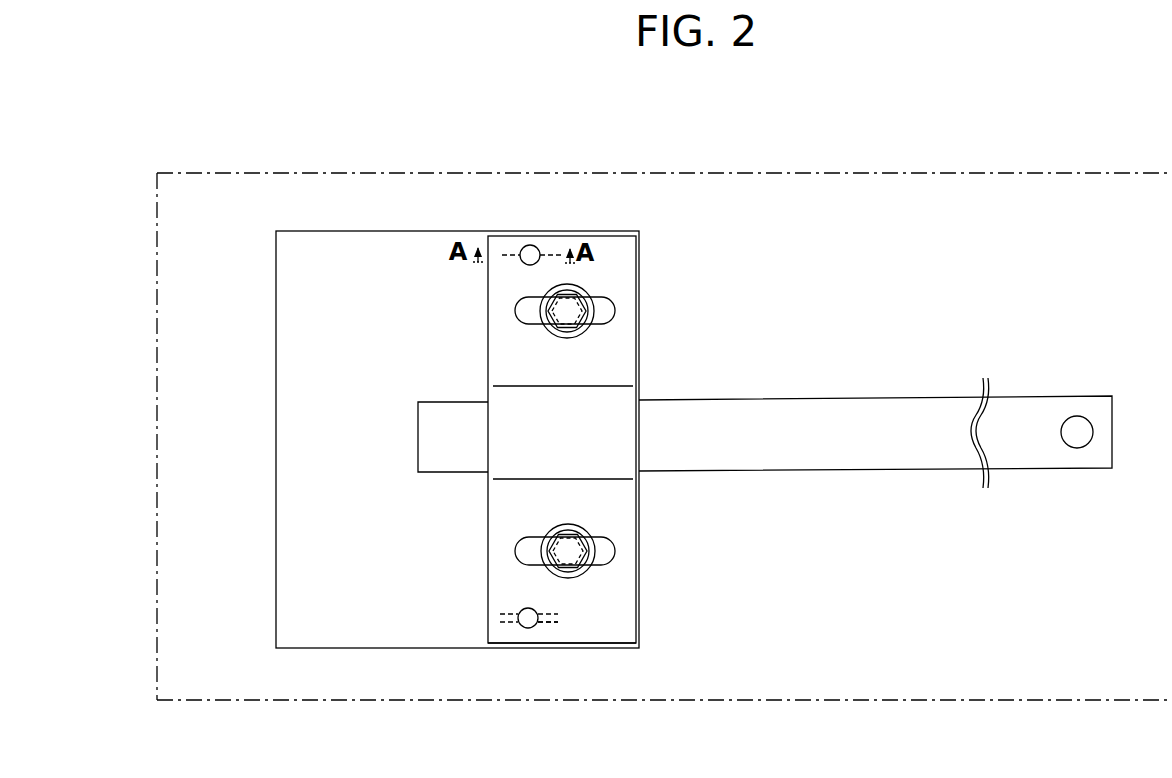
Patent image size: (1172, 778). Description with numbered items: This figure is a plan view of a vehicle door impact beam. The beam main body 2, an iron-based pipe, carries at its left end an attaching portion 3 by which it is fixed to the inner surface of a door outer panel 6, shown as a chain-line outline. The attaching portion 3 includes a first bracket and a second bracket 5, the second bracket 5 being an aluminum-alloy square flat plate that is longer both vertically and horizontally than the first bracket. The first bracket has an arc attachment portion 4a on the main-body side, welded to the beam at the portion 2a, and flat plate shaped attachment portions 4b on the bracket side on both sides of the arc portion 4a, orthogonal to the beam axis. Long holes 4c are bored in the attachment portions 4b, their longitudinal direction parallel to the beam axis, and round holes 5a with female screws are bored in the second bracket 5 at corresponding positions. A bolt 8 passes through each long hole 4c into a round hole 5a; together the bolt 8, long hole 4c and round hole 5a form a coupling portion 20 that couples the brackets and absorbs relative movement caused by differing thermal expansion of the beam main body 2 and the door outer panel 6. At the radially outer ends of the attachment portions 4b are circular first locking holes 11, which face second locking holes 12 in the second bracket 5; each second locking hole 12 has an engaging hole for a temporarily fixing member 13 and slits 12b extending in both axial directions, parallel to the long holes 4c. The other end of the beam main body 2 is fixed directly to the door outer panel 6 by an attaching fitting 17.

The beam main body 2 is at (905, 435).
The portion where the attachment portion on the main-body side is securely installed 2a is at (533, 456).
The attaching portion 3 is at (367, 214).
The arc attachment portion on the main-body side 4a is at (610, 432).
The flat plate shaped attachment portion on the bracket side 4b is at (598, 272).
The long hole 4c is at (520, 318).
The second bracket 5 is at (430, 262).
The round hole 5a is at (558, 330).
The door outer panel 6 is at (1025, 190).
The bolt 8 is at (585, 312).
The first locking hole 11 is at (533, 652).
The second locking hole 12 is at (542, 254).
The slit 12b is at (560, 635).
The temporarily fixing member 13 is at (528, 245).
The attaching fitting 17 is at (1073, 440).
The coupling portion 20 is at (598, 341).